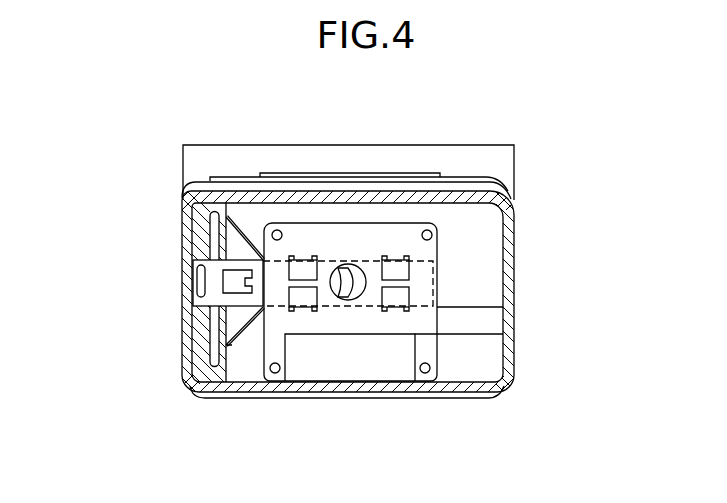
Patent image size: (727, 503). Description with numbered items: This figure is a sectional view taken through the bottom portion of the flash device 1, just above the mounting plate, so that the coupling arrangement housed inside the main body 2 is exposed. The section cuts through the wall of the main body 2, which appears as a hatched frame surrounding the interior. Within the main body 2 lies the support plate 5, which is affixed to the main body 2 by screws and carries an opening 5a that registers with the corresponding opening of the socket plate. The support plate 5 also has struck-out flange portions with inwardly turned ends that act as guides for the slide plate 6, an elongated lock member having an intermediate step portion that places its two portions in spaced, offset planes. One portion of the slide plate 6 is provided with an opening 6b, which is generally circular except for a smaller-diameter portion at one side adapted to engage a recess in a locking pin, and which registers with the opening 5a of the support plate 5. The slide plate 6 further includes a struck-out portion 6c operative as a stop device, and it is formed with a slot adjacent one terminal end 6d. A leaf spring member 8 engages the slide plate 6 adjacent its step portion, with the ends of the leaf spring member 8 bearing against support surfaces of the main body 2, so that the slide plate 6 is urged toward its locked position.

The flash device 1 is at (227, 128).
The main body 2 is at (483, 258).
The support plate 5 is at (307, 237).
The opening 5a is at (349, 272).
The slide plate 6 is at (374, 308).
The opening 6b is at (360, 300).
The struck-out portion 6c is at (190, 328).
The terminal end 6d is at (243, 280).
The leaf spring member 8 is at (222, 242).